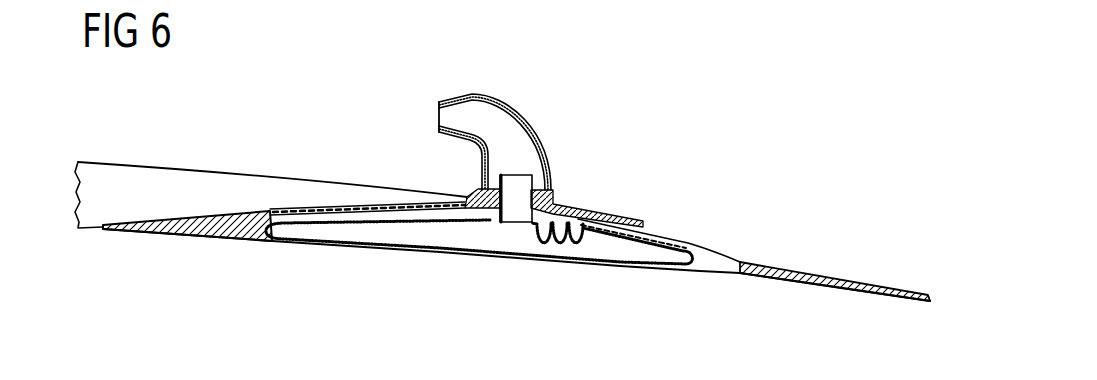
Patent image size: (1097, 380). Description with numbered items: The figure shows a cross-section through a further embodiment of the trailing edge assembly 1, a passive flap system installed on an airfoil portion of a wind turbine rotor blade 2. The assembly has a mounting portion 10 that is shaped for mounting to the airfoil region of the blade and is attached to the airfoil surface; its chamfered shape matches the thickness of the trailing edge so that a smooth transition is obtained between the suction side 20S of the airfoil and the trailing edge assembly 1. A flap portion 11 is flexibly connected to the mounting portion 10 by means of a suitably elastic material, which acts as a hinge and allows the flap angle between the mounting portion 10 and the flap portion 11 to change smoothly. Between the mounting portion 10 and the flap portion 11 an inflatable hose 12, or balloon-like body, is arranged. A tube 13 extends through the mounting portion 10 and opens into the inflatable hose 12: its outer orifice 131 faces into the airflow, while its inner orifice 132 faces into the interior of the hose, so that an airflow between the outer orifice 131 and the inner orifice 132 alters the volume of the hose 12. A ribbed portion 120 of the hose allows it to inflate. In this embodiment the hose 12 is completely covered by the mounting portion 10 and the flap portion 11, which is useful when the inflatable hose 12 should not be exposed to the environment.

The trailing edge assembly 1 is at (331, 163).
The wind turbine rotor blade 2 is at (88, 212).
The suction side 20S is at (168, 158).
The mounting portion 10 is at (257, 242).
The flap portion 11 is at (845, 280).
The inflatable hose 12 is at (648, 250).
The tube 13 is at (518, 133).
The outer orifice 131 is at (446, 118).
The inner orifice 132 is at (513, 213).
The ribbed portion 120 is at (566, 266).